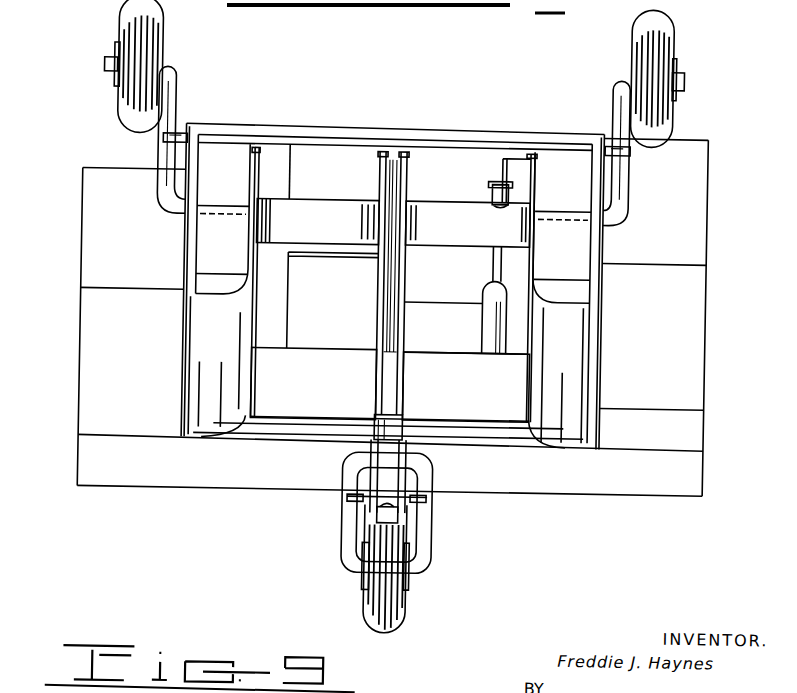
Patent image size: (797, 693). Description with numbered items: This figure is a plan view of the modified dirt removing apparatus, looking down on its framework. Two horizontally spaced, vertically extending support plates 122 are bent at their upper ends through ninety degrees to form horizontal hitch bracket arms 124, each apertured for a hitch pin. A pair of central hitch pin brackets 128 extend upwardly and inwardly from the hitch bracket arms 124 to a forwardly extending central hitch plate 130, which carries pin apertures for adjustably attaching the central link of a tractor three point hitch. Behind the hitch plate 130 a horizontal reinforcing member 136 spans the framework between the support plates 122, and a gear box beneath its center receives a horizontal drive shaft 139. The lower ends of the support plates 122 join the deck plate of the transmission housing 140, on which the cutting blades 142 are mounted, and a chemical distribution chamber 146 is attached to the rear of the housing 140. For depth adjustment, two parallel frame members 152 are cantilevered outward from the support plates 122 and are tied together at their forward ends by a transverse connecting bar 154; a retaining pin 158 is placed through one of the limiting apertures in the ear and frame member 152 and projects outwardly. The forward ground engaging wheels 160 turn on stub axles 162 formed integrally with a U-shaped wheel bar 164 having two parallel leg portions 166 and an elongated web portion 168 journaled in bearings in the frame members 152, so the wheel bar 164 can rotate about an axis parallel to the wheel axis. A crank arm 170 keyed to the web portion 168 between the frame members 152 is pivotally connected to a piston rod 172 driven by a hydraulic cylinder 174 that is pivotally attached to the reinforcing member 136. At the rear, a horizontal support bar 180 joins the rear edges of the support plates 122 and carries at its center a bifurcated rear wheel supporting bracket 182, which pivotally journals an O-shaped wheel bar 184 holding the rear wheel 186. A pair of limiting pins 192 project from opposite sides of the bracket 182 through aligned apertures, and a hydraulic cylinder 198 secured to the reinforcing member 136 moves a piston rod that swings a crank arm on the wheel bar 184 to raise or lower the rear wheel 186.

The support plates 122 is at (225, 348).
The hitch bracket arms 124 is at (245, 152).
The central hitch pin brackets 128 is at (332, 230).
The central hitch plate 130 is at (377, 291).
The horizontal reinforcing member 136 is at (334, 391).
The drive shaft 139 is at (385, 181).
The transmission housing 140 is at (76, 356).
The cutting blades 142 is at (105, 202).
The chemical distribution chamber 146 is at (78, 471).
The frame members 152 is at (182, 250).
The transverse connecting bar 154 is at (470, 134).
The retaining pin 158 is at (160, 148).
The forward ground engaging wheels 160 is at (113, 18).
The stub axles 162 is at (103, 76).
The U-shaped wheel bar 164 is at (219, 205).
The leg portions 166 is at (173, 103).
The web portion 168 is at (549, 210).
The crank arm 170 is at (486, 193).
The piston rod 172 is at (488, 257).
The hydraulic cylinder 174 is at (489, 317).
The horizontal support bar 180 is at (259, 428).
The rear wheel supporting bracket 182 is at (404, 479).
The O-shaped wheel bar 184 is at (350, 532).
The wheel 186 is at (388, 599).
The limiting pins 192 is at (353, 499).
The hydraulic cylinder 198 is at (394, 429).